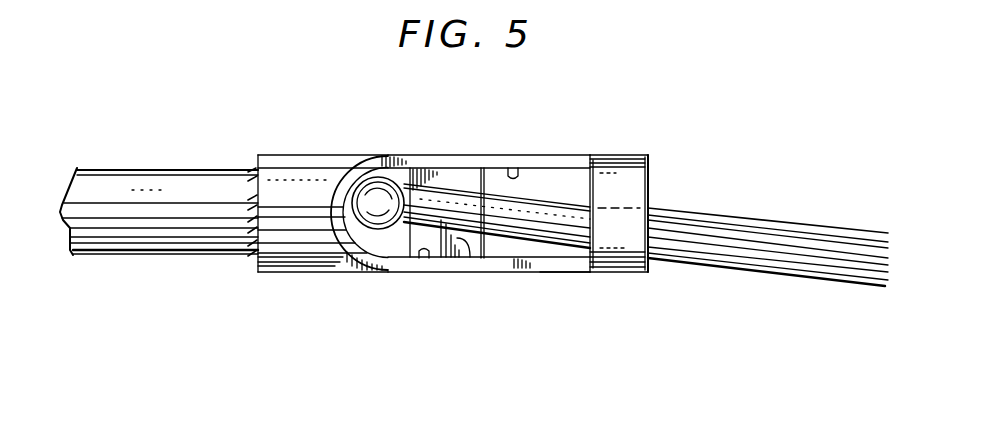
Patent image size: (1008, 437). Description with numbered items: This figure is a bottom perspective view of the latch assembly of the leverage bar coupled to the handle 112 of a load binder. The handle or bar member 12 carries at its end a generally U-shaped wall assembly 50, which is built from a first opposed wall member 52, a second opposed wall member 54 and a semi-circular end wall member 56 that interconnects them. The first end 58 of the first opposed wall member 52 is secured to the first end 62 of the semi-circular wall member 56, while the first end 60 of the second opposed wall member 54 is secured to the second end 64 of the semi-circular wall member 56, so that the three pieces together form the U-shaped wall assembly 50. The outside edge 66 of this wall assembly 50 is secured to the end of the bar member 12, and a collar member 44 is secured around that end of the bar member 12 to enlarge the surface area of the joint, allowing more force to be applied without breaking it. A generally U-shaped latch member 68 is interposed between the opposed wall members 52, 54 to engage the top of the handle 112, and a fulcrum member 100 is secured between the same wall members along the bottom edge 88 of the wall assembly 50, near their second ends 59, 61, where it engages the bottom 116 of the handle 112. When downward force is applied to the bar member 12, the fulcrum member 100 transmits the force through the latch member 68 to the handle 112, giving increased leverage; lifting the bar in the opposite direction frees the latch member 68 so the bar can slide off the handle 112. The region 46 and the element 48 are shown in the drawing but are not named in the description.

The bar member 12 is at (230, 202).
The collar member 44 is at (298, 165).
The outside edge 66 is at (363, 157).
The first end of semi-circular wall 62 is at (388, 166).
The first end of first opposed wall member 58 is at (402, 162).
The first opposed wall member 52 is at (433, 155).
The chamber 46 is at (513, 172).
The latch member 68 is at (490, 189).
The second end of first opposed wall member 59 is at (640, 172).
The fulcrum member 100 is at (623, 208).
The second end of second opposed wall member 61 is at (650, 275).
The handle 112 is at (768, 232).
The bottom of handle 116 is at (812, 240).
The semi-circular end wall member 56 is at (355, 265).
The second end of semi-circular wall member 64 is at (377, 273).
The first end of second opposed wall member 60 is at (390, 268).
The block 48 is at (423, 252).
The bottom edge 88 is at (472, 245).
The U-shaped wall assembly 50 is at (498, 274).
The second opposed wall member 54 is at (553, 267).